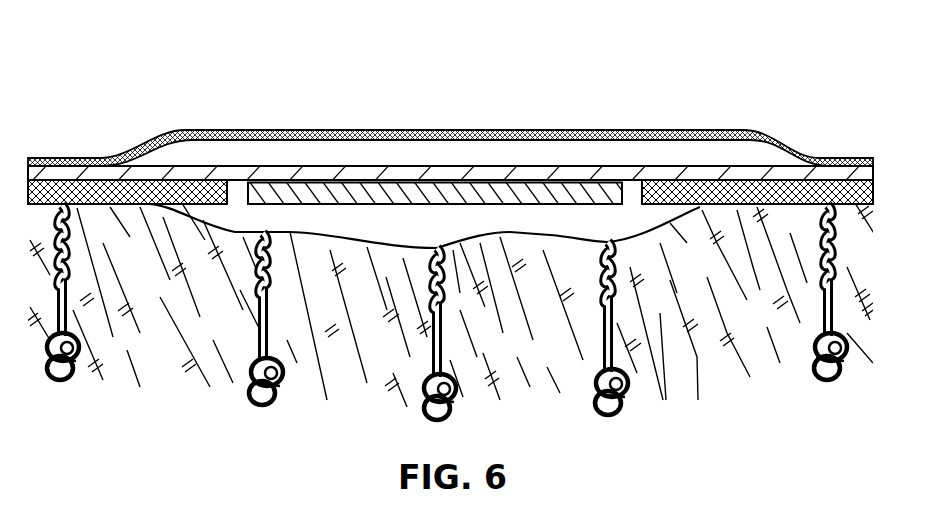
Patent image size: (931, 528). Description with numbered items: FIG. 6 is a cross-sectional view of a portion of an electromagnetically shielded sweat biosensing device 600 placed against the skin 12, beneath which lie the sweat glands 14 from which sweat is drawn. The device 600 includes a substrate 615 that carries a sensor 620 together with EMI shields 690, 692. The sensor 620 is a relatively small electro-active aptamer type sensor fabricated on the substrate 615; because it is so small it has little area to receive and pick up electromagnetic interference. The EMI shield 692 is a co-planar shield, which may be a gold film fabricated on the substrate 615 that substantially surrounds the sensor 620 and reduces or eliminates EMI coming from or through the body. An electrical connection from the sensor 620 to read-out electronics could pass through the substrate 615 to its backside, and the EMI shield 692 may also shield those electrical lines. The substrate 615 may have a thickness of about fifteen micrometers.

The device 600 is at (450, 111).
The skin 12 is at (756, 350).
The sweat glands 14 is at (78, 363).
The substrate 615 is at (592, 172).
The sensor 620 is at (321, 190).
The EMI shield 690 is at (458, 130).
The EMI shield 692 is at (80, 186).